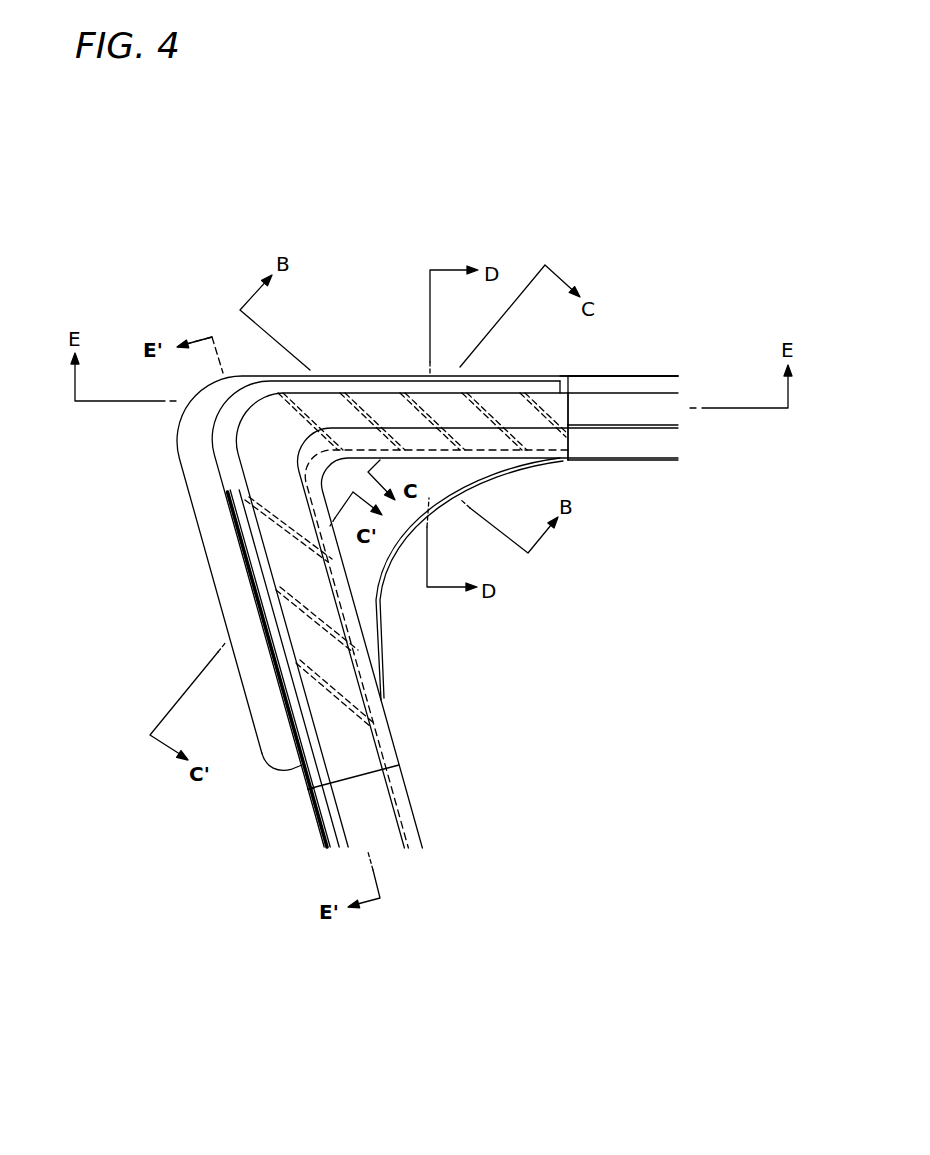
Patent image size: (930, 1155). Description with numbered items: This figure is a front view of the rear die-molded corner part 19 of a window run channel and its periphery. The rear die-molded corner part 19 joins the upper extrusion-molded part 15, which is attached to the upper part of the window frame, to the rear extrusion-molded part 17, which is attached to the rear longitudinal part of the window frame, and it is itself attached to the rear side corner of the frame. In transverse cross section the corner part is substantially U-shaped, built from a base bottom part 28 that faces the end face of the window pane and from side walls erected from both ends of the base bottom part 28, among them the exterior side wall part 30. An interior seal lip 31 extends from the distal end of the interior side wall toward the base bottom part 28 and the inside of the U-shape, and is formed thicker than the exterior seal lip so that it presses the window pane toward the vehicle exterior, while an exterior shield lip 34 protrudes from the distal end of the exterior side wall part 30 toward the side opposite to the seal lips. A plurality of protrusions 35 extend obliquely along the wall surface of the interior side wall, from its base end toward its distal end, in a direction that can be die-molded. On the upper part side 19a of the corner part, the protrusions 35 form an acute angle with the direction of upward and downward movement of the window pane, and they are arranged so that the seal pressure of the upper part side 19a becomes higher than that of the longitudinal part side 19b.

The upper extrusion-molded part 15 is at (650, 370).
The rear extrusion-molded part 17 is at (318, 827).
The rear die-molded corner part 19 is at (241, 368).
The upper part side 19a is at (415, 374).
The longitudinal part side 19b is at (258, 737).
The base bottom part 28 is at (547, 387).
The exterior side wall part 30 is at (535, 375).
The interior seal lip 31 is at (568, 438).
The exterior shield lip 34 is at (568, 408).
The protrusion 35 is at (365, 417).